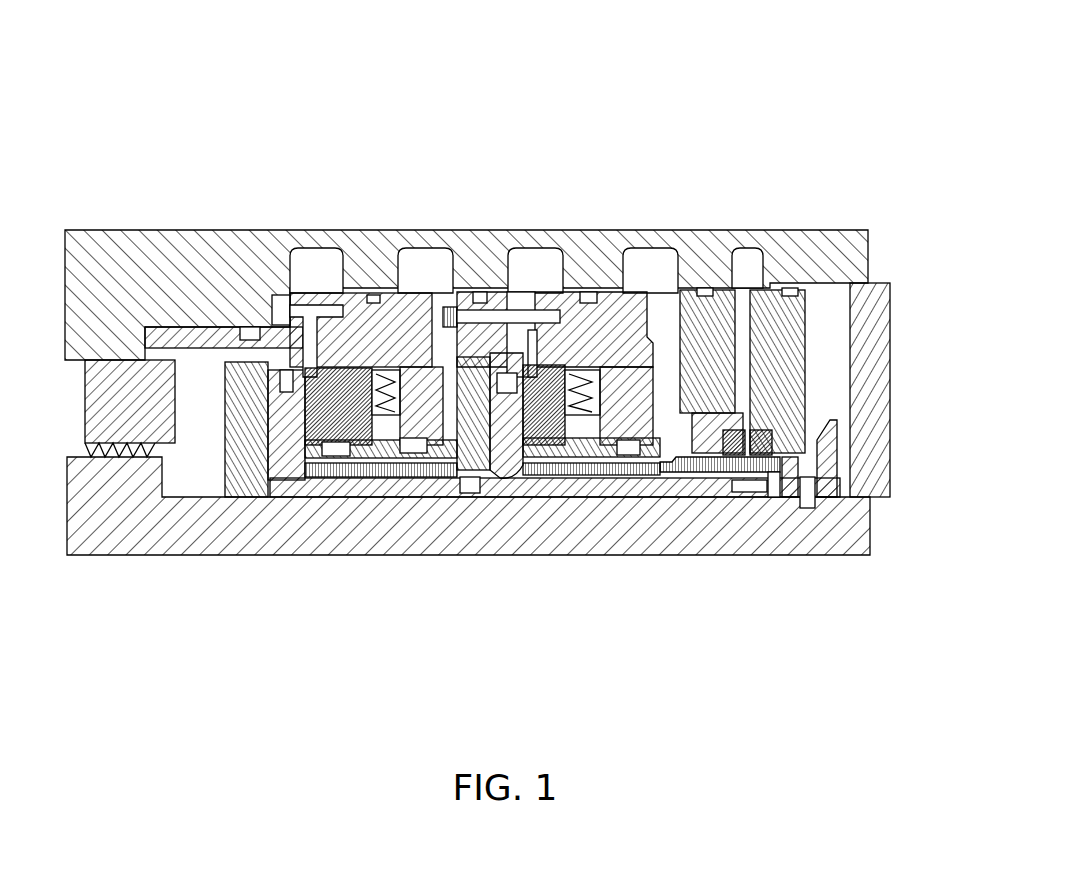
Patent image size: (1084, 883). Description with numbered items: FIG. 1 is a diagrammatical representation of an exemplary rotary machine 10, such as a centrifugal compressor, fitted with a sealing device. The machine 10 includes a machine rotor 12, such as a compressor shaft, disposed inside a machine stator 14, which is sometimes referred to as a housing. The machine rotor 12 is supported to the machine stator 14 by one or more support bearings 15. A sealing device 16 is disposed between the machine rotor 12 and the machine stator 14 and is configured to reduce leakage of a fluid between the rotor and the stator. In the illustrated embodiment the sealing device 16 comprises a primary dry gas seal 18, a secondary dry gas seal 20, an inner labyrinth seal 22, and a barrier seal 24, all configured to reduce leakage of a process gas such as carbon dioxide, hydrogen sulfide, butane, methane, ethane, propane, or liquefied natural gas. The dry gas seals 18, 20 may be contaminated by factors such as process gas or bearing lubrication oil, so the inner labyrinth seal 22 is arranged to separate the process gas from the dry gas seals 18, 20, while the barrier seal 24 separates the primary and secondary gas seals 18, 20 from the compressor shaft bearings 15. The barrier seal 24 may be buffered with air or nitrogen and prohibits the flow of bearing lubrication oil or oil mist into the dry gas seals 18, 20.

The rotary machine 10 is at (513, 358).
The machine rotor 12 is at (872, 540).
The machine stator 14 is at (224, 230).
The support bearings 15 is at (892, 352).
The sealing device 16 is at (93, 633).
The primary dry gas seal 18 is at (342, 500).
The secondary dry gas seal 20 is at (598, 500).
The inner labyrinth seal 22 is at (120, 462).
The barrier seal 24 is at (772, 500).